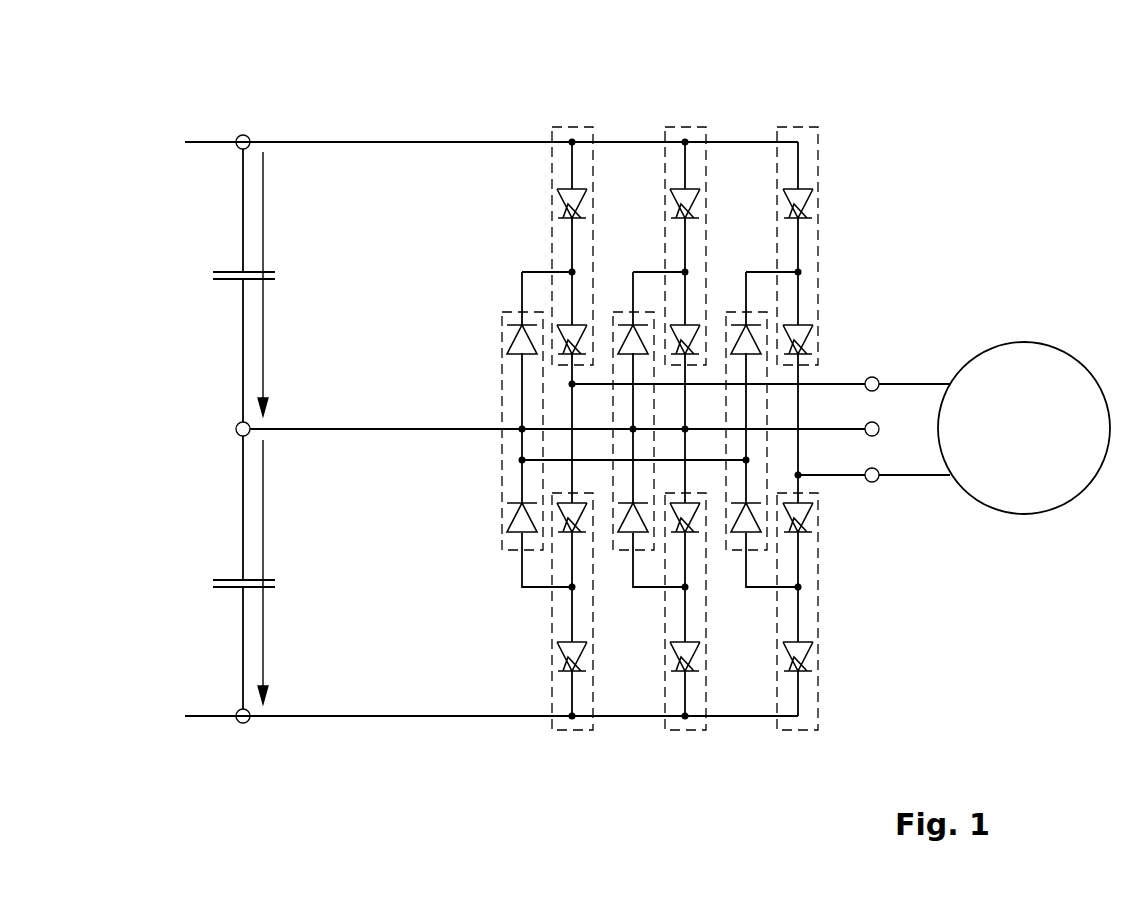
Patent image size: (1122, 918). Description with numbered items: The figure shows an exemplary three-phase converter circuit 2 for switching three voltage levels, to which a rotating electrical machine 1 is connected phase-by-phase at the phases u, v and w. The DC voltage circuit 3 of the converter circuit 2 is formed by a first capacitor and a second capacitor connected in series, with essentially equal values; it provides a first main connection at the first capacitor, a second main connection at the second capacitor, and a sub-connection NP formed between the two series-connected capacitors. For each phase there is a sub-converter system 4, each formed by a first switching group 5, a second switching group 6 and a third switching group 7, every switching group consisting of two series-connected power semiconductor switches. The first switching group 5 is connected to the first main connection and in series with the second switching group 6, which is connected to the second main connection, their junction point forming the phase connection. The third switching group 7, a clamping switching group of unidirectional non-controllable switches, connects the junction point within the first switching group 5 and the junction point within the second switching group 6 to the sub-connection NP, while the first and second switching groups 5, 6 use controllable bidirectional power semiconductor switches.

The rotating electrical machine 1 is at (1013, 342).
The converter circuit 2 is at (383, 128).
The DC voltage circuit 3 is at (212, 350).
The sub-converter system 4 is at (487, 378).
The first switching group 5 is at (593, 127).
The second switching group 6 is at (580, 730).
The third switching group 7 is at (503, 550).